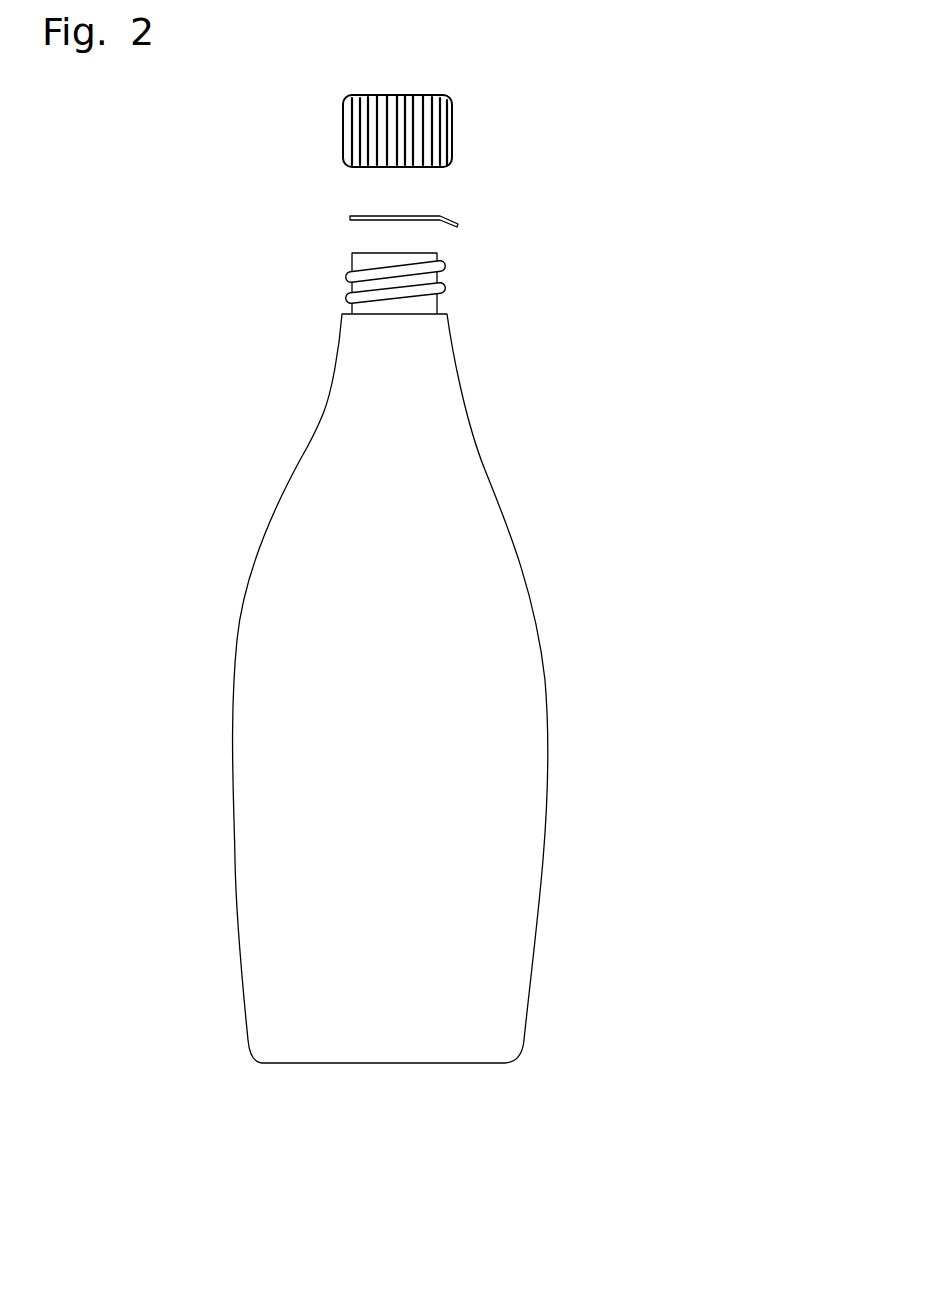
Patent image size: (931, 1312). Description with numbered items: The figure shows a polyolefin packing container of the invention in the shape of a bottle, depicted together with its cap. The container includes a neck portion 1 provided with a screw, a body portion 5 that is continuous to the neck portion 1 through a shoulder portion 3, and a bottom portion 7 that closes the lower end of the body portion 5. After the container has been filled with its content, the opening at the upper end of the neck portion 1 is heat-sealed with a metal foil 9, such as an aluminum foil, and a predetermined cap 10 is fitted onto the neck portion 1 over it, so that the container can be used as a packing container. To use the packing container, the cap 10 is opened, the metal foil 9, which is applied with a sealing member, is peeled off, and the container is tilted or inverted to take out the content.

The neck portion 1 is at (468, 292).
The shoulder portion 3 is at (492, 457).
The body portion 5 is at (533, 705).
The bottom portion 7 is at (460, 1064).
The metal foil 9 is at (350, 217).
The cap 10 is at (452, 128).